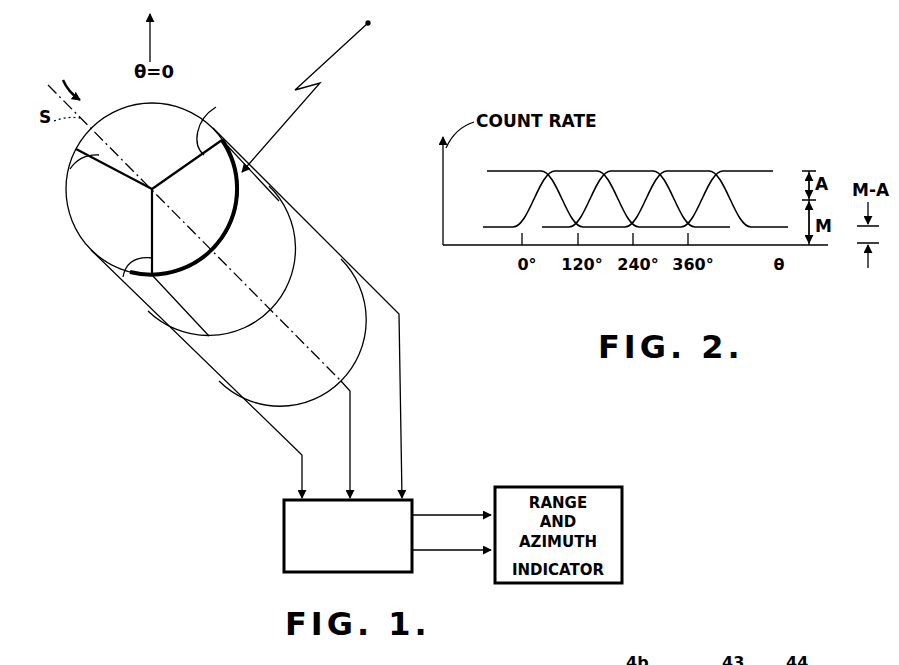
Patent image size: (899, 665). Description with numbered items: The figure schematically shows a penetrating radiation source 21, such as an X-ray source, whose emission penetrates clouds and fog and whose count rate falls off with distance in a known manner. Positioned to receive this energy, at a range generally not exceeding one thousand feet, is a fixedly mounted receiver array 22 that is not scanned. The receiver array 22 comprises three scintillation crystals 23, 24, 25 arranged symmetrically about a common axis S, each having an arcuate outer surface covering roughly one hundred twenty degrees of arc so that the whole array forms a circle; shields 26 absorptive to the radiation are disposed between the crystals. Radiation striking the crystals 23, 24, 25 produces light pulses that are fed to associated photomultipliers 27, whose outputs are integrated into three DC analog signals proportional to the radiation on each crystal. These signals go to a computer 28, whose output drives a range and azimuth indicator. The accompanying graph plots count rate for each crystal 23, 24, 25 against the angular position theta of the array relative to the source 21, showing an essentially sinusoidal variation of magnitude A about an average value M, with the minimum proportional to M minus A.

In FIG. 1, the penetrating radiation source 21 is at (373, 91).
In FIG. 1, the receiver array 22 is at (67, 80).
In FIG. 1, the scintillation crystal 23 is at (127, 116).
In FIG. 2, the scintillation crystal 23 is at (514, 171).
In FIG. 1, the scintillation crystal 24 is at (283, 250).
In FIG. 2, the scintillation crystal 24 is at (586, 171).
In FIG. 1, the scintillation crystal 25 is at (108, 231).
In FIG. 2, the scintillation crystal 25 is at (641, 171).
In FIG. 1, the shields 26 is at (110, 299).
In FIG. 1, the photomultipliers 27 is at (342, 285).
In FIG. 1, the computer 28 is at (284, 528).